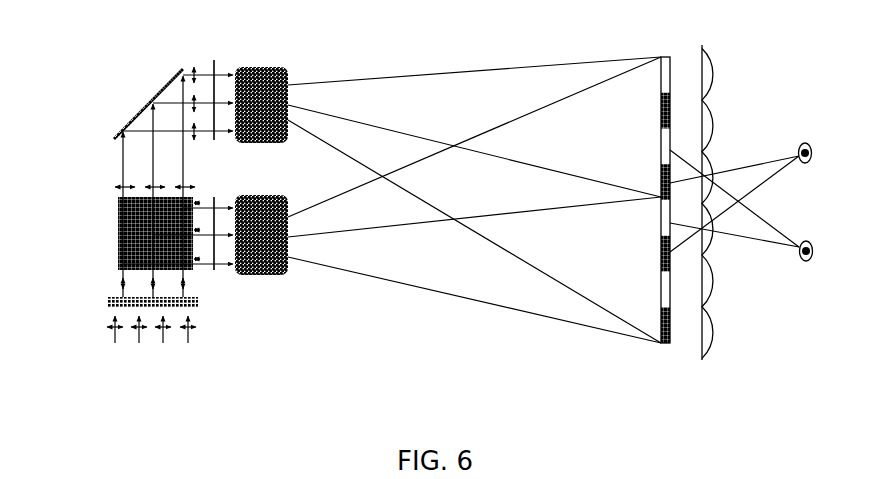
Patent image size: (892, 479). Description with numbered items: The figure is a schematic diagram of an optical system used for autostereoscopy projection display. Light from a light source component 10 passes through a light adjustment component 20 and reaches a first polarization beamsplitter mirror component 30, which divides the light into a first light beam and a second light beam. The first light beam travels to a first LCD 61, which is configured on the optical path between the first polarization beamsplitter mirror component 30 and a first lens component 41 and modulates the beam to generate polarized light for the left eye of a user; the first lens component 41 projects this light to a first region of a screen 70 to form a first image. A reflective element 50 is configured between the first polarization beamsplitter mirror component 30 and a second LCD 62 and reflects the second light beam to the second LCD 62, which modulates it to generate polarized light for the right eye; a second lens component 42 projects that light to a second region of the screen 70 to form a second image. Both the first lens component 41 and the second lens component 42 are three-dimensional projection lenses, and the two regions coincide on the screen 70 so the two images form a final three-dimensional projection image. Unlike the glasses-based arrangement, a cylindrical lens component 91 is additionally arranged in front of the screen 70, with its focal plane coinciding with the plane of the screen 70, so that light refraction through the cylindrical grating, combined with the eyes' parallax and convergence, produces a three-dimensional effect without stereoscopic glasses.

The light source component 10 is at (109, 334).
The light adjustment component 20 is at (105, 304).
The first polarization beamsplitter mirror component 30 is at (118, 243).
The first lens component 41 is at (270, 275).
The second lens component 42 is at (260, 67).
The reflective element 50 is at (115, 137).
The first LCD 61 is at (214, 270).
The second LCD 62 is at (214, 60).
The screen 70 is at (667, 345).
The cylindrical lens component 91 is at (702, 360).